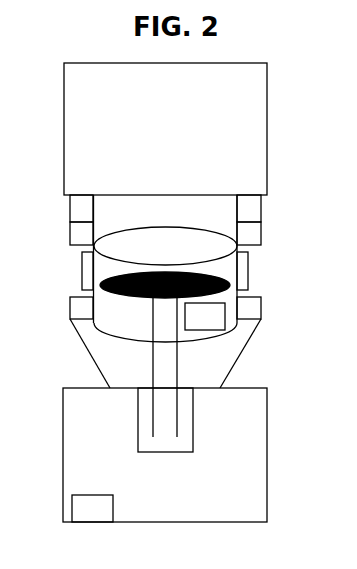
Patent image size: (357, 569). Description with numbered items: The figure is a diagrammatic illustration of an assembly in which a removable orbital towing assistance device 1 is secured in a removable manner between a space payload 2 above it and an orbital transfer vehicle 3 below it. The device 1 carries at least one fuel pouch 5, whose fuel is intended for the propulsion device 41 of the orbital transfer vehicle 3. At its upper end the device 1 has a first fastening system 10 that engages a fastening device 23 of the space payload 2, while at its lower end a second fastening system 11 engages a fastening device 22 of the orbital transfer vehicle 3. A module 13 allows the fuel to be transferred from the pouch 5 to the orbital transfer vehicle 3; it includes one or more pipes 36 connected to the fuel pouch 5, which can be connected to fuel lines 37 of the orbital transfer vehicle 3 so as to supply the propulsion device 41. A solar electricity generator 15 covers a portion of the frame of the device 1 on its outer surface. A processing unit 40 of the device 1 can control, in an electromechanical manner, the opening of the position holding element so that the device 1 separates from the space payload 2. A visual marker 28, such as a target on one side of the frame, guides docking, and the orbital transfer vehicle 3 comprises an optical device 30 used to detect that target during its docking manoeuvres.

The removable orbital towing assistance device 1 is at (259, 270).
The space payload 2 is at (170, 138).
The orbital transfer vehicle 3 is at (171, 478).
The fuel pouch 5 is at (134, 298).
The first fastening system 10 is at (72, 232).
The second fastening system 11 is at (72, 306).
The module 13 is at (175, 324).
The solar electricity generator 15 is at (84, 273).
The fastening device 22 is at (244, 355).
The fastening device 23 is at (72, 206).
The visual marker 28 is at (118, 343).
The optical device 30 is at (103, 517).
The pipe 36 is at (180, 353).
The fuel line 37 is at (150, 382).
The processing unit 40 is at (215, 326).
The propulsion device 41 is at (174, 427).